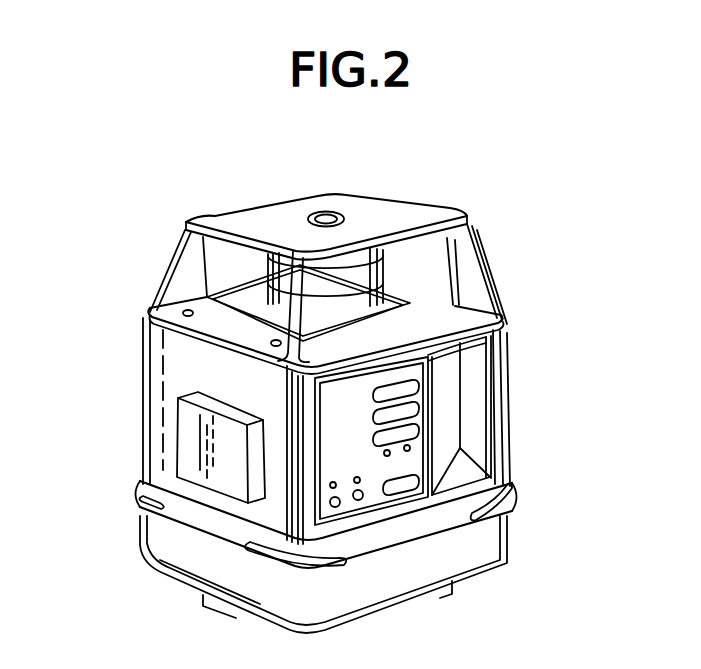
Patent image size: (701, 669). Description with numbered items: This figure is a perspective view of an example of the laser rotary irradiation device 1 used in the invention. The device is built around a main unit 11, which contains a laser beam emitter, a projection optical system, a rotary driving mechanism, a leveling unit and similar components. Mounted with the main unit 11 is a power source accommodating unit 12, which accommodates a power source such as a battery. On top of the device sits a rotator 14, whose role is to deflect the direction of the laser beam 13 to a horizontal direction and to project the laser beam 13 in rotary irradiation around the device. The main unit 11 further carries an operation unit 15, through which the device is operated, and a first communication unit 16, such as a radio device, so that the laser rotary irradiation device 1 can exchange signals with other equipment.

The laser rotary irradiation device 1 is at (336, 153).
The main unit 11 is at (147, 372).
The power source accommodating unit 12 is at (512, 537).
The laser beam 13 is at (465, 221).
The rotator 14 is at (393, 260).
The operation unit 15 is at (343, 453).
The first communication unit 16 is at (173, 423).